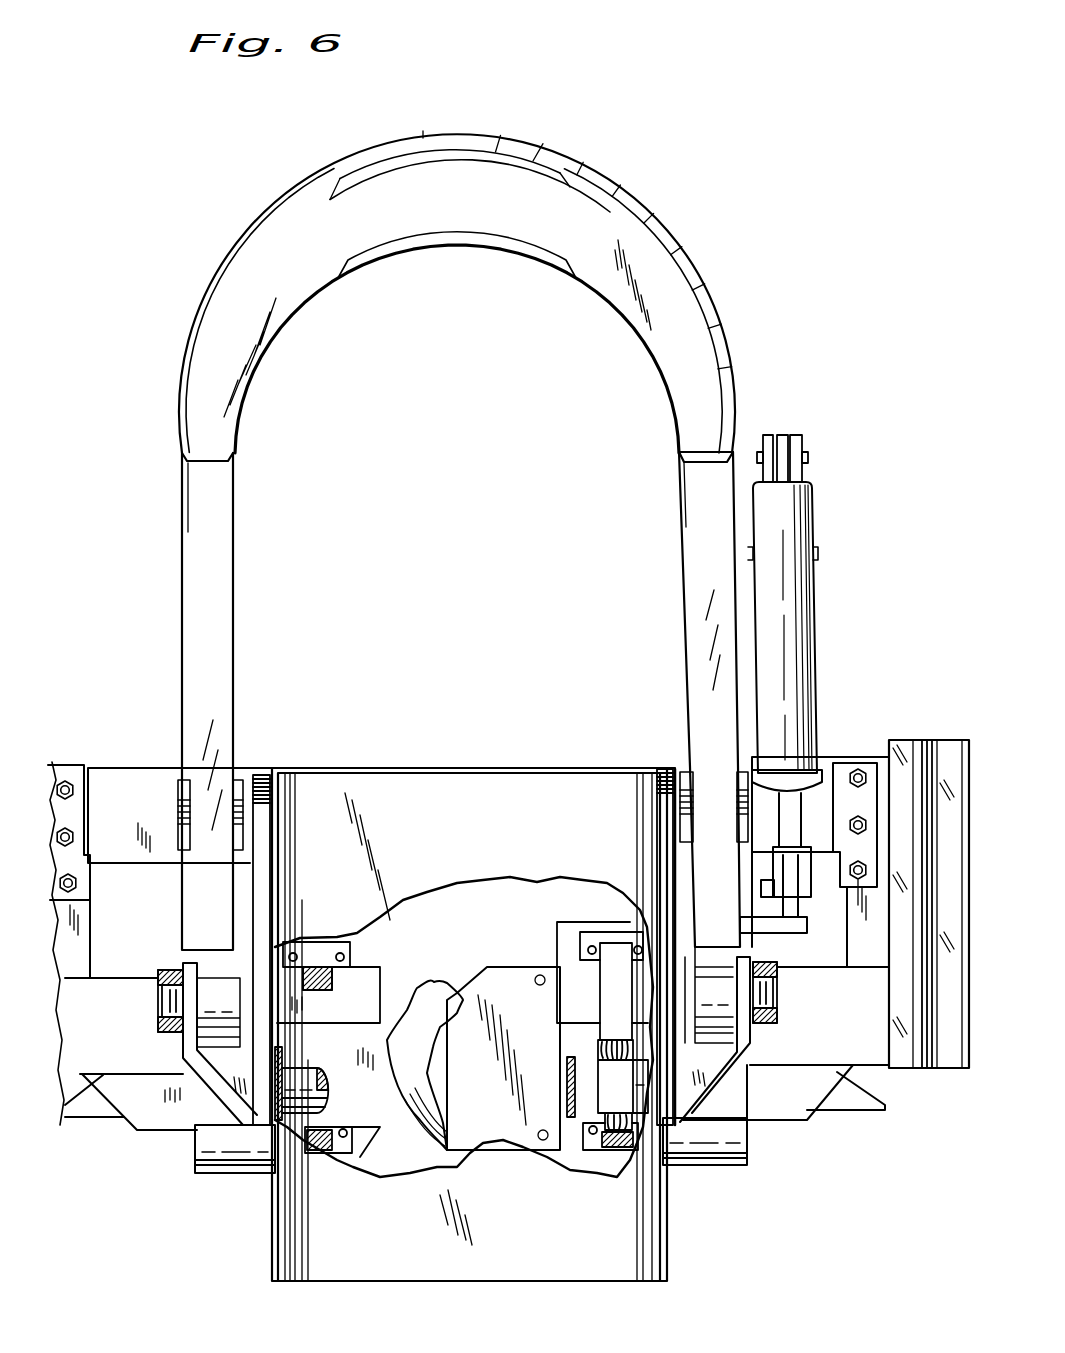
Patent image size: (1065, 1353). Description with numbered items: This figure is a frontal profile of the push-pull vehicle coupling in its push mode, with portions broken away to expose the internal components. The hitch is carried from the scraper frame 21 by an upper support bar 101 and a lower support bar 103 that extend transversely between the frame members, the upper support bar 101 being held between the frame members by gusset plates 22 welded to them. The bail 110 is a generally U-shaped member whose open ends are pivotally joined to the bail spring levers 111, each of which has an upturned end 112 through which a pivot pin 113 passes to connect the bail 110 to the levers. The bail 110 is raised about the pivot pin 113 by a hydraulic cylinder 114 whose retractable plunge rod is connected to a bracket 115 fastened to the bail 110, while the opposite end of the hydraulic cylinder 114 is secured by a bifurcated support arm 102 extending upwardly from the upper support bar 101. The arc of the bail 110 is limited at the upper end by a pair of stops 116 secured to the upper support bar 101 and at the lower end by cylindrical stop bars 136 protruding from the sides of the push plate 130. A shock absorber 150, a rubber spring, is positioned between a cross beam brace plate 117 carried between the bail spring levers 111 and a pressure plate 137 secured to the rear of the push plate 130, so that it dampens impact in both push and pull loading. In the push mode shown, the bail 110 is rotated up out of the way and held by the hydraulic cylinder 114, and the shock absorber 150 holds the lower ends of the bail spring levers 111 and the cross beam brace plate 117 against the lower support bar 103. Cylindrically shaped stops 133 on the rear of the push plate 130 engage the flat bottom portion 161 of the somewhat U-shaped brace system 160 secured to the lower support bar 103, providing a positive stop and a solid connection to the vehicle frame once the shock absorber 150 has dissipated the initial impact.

The bail 110 is at (618, 195).
The bifurcated support arm 102 is at (797, 435).
The hydraulic cylinder 114 is at (814, 585).
The upper support bar 101 is at (131, 740).
The gusset plates 22 is at (907, 740).
The bail spring lever 111 is at (255, 773).
The stops 116 is at (176, 800).
The scraper frame 21 is at (85, 940).
The lower support bar 103 is at (112, 977).
The pivot pin 113 is at (158, 1000).
The upturned end 112 is at (183, 1050).
The cylindrical stop bars 136 is at (232, 1175).
The push plate 130 is at (441, 1254).
The cross beam brace plate 117 is at (417, 980).
The brace system 160 is at (598, 990).
The shock absorber 150 is at (388, 1050).
The cylindrically shaped stop 133 is at (296, 1068).
The pressure plate 137 is at (483, 1097).
The bottom portion 161 is at (598, 1078).
The bracket 115 is at (786, 930).